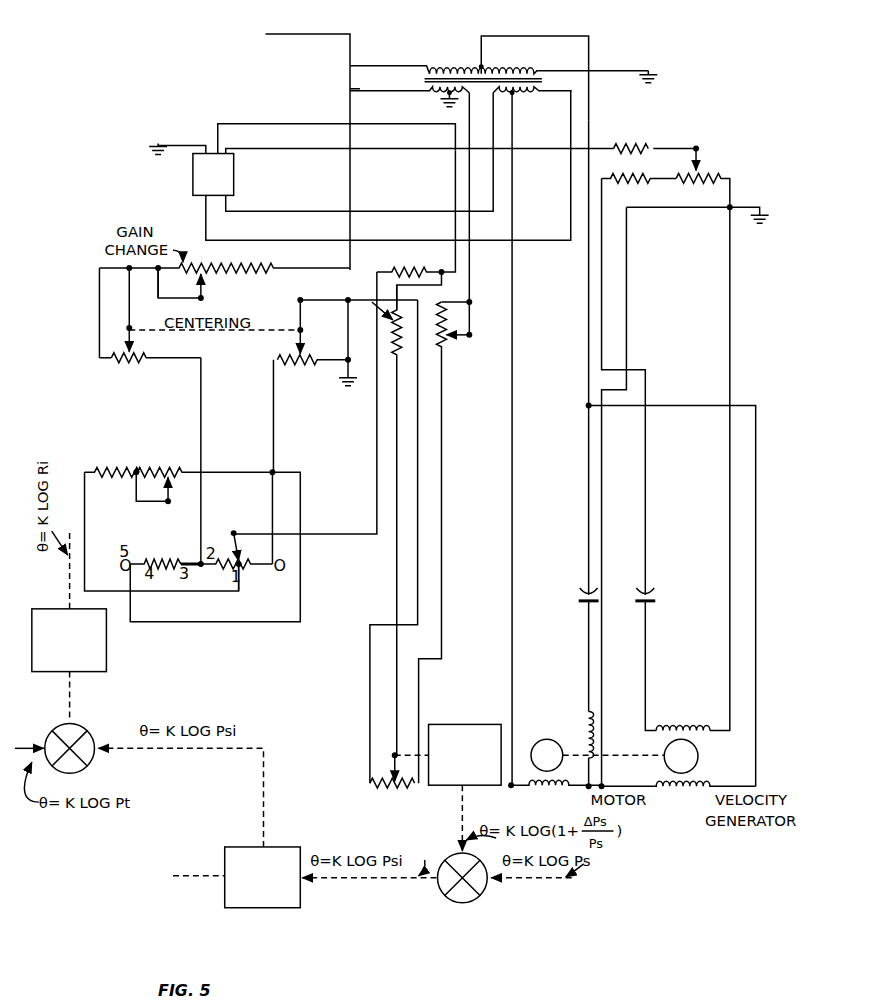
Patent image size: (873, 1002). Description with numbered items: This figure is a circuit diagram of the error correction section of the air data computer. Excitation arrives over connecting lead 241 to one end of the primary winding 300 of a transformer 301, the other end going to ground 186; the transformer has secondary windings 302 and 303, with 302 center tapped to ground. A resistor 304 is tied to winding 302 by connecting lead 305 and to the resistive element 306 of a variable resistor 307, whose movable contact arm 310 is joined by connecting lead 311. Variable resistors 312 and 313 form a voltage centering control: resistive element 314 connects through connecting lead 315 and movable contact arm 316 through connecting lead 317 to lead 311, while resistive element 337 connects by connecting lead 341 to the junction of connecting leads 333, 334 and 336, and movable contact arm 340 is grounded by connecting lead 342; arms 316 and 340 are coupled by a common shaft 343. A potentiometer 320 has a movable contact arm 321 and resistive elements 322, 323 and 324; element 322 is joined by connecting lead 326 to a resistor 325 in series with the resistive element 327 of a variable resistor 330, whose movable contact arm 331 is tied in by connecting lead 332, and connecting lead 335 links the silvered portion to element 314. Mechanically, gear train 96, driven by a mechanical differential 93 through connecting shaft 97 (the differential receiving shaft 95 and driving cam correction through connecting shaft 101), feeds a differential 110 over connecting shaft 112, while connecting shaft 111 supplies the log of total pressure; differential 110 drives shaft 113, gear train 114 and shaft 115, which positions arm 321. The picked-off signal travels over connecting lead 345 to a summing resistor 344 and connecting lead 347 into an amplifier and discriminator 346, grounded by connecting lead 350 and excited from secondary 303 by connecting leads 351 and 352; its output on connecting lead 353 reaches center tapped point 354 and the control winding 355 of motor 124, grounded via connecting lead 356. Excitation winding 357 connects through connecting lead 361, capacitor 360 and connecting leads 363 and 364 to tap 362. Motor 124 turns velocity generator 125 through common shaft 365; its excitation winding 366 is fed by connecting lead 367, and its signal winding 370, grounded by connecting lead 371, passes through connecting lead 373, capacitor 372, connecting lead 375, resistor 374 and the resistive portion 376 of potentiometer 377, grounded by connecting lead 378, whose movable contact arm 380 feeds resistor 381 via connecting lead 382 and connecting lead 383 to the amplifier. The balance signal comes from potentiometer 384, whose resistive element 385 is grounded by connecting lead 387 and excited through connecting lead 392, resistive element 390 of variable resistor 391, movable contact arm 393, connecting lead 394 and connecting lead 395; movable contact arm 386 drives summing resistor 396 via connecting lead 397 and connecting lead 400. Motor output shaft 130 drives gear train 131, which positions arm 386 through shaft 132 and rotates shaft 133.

The connecting lead 241 is at (292, 33).
The primary winding 300 is at (482, 63).
The tap 362 is at (483, 63).
The ground 186 is at (158, 146).
The transformer 301 is at (377, 81).
The secondary winding 302 is at (445, 92).
The secondary winding 303 is at (527, 90).
The center tapped point 354 is at (517, 95).
The connecting lead 350 is at (185, 142).
The connecting lead 347 is at (324, 120).
The connecting lead 383 is at (421, 148).
The amplifier and discriminator 346 is at (233, 170).
The connecting lead 305 is at (350, 194).
The connecting lead 351 is at (367, 211).
The connecting lead 352 is at (354, 241).
The connecting lead 353 is at (515, 173).
The resistor 381 is at (620, 148).
The connecting lead 382 is at (674, 148).
The potentiometer 377 is at (738, 130).
The movable contact arm 380 is at (699, 150).
The resistive portion 376 is at (713, 177).
The resistor 374 is at (626, 184).
The connecting lead 378 is at (736, 205).
The connecting lead 375 is at (603, 279).
The connecting lead 356 is at (628, 336).
The connecting lead 364 is at (590, 375).
The connecting lead 363 is at (590, 445).
The connecting lead 367 is at (758, 433).
The connecting lead 371 is at (732, 558).
The capacitor 360 is at (597, 589).
The capacitor 372 is at (655, 592).
The connecting lead 361 is at (590, 635).
The connecting lead 373 is at (648, 665).
The excitation winding 357 is at (588, 714).
The signal winding 370 is at (663, 730).
The velocity generator 125 is at (691, 739).
The common shaft 365 is at (659, 761).
The excitation winding 366 is at (690, 795).
The motor 124 is at (544, 740).
The control winding 355 is at (540, 792).
The output shaft 130 is at (504, 797).
The gear train 131 is at (445, 726).
The shaft 132 is at (422, 782).
The shaft 133 is at (462, 826).
The movable contact arm 386 is at (393, 766).
The potentiometer 384 is at (357, 800).
The resistive element 385 is at (400, 790).
The connecting lead 387 is at (418, 455).
The connecting lead 392 is at (442, 492).
The connecting lead 397 is at (397, 432).
The connecting lead 345 is at (377, 468).
The mechanical differential 93 is at (470, 898).
The shaft 95 is at (548, 881).
The connecting shaft 97 is at (365, 878).
The gear train 96 is at (284, 912).
The connecting shaft 101 is at (195, 878).
The connecting shaft 112 is at (263, 805).
The differential 110 is at (93, 765).
The connecting shaft 111 is at (27, 749).
The shaft 113 is at (68, 713).
The gear train 114 is at (105, 655).
The shaft 115 is at (68, 582).
The variable resistor 307 is at (208, 249).
The resistor 304 is at (239, 268).
The resistive element 306 is at (206, 273).
The movable contact arm 310 is at (203, 298).
The connecting lead 311 is at (159, 288).
The connecting lead 317 is at (126, 305).
The connecting lead 315 is at (98, 319).
The movable contact arm 316 is at (128, 338).
The resistive element 314 is at (118, 365).
The variable resistor 312 is at (155, 369).
The common shaft 343 is at (195, 332).
The resistive element 337 is at (296, 356).
The variable resistor 313 is at (312, 372).
The movable contact arm 340 is at (302, 338).
The connecting lead 342 is at (303, 300).
The summing resistor 396 is at (383, 301).
The summing resistor 344 is at (410, 258).
The connecting lead 395 is at (457, 255).
The variable resistor 391 is at (491, 281).
The connecting lead 400 is at (418, 286).
The connecting lead 394 is at (470, 302).
The movable contact arm 393 is at (470, 335).
The resistive element 390 is at (445, 340).
The connecting lead 335 is at (200, 393).
The connecting lead 341 is at (273, 432).
The resistor 325 is at (112, 470).
The variable resistor 330 is at (164, 440).
The resistive element 327 is at (143, 472).
The connecting lead 333 is at (228, 473).
The connecting lead 334 is at (272, 500).
The connecting lead 336 is at (300, 488).
The connecting lead 332 is at (135, 492).
The movable contact arm 331 is at (171, 493).
The connecting lead 326 is at (83, 510).
The resistive element 324 is at (170, 563).
The movable contact arm 321 is at (232, 536).
The resistive element 322 is at (240, 570).
The resistive element 323 is at (219, 572).
The potentiometer 320 is at (244, 638).